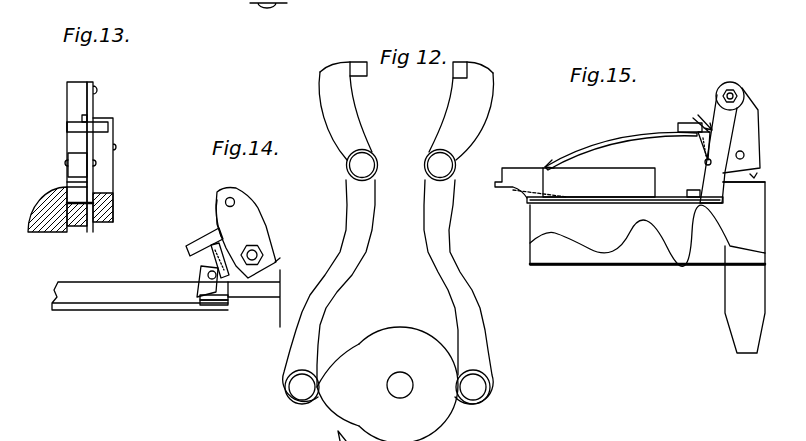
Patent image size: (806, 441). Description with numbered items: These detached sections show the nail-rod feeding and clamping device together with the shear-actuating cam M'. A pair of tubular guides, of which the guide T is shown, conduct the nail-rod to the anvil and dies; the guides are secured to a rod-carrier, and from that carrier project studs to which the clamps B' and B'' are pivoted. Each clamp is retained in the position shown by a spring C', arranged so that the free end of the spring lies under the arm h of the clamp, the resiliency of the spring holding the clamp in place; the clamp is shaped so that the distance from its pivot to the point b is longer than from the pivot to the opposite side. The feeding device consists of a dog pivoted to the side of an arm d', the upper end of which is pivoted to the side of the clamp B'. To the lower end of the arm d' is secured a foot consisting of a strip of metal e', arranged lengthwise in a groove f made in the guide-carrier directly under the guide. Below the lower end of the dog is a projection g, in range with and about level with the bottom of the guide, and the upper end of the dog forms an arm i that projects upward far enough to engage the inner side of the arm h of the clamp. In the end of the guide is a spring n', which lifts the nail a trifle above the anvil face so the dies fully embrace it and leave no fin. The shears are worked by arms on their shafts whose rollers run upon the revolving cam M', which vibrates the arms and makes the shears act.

In FIG. 12, the cam M' is at (387, 384).
In FIG. 13, the clamp B' is at (77, 142).
In FIG. 14, the clamp B' is at (246, 233).
In FIG. 15, the clamp B'' is at (738, 127).
In FIG. 13, the arm d' is at (104, 157).
In FIG. 14, the arm d' is at (205, 217).
In FIG. 15, the arm d' is at (715, 149).
In FIG. 13, the arm of the clamp h is at (66, 124).
In FIG. 14, the arm of the clamp h is at (201, 242).
In FIG. 15, the arm of the clamp h is at (689, 119).
In FIG. 13, the arm i is at (53, 130).
In FIG. 14, the arm i is at (220, 260).
In FIG. 15, the arm i is at (704, 148).
In FIG. 13, the projection g is at (66, 183).
In FIG. 14, the projection g is at (232, 300).
In FIG. 13, the pawl c' is at (80, 165).
In FIG. 14, the pawl c' is at (206, 281).
In FIG. 13, the strip of metal e' is at (80, 195).
In FIG. 14, the strip of metal e' is at (166, 298).
In FIG. 15, the strip of metal e' is at (625, 206).
In FIG. 14, the point of the clamp b is at (280, 259).
In FIG. 15, the point of the clamp b is at (744, 171).
In FIG. 15, the spring C' is at (621, 146).
In FIG. 15, the spring n' is at (524, 183).
In FIG. 15, the guide T is at (599, 182).
In FIG. 15, the groove f is at (528, 207).